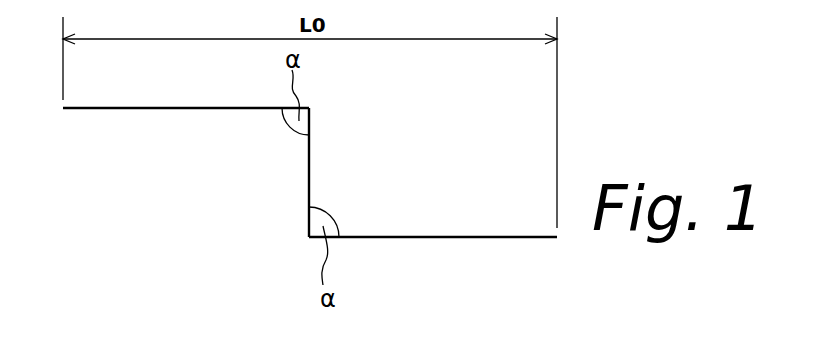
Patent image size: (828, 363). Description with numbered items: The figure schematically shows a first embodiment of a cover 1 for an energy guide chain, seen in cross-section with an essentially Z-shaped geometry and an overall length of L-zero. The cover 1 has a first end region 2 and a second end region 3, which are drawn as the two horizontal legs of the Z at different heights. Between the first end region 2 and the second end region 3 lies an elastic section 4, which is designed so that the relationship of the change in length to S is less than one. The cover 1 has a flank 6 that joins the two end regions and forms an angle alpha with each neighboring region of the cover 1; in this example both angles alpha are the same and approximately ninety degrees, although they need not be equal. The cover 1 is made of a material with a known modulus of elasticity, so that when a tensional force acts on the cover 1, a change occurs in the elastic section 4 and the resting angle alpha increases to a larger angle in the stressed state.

The cover 1 is at (361, 206).
The first end region 2 is at (86, 139).
The second end region 3 is at (515, 248).
The elastic section 4 is at (256, 204).
The flank 6 is at (309, 179).